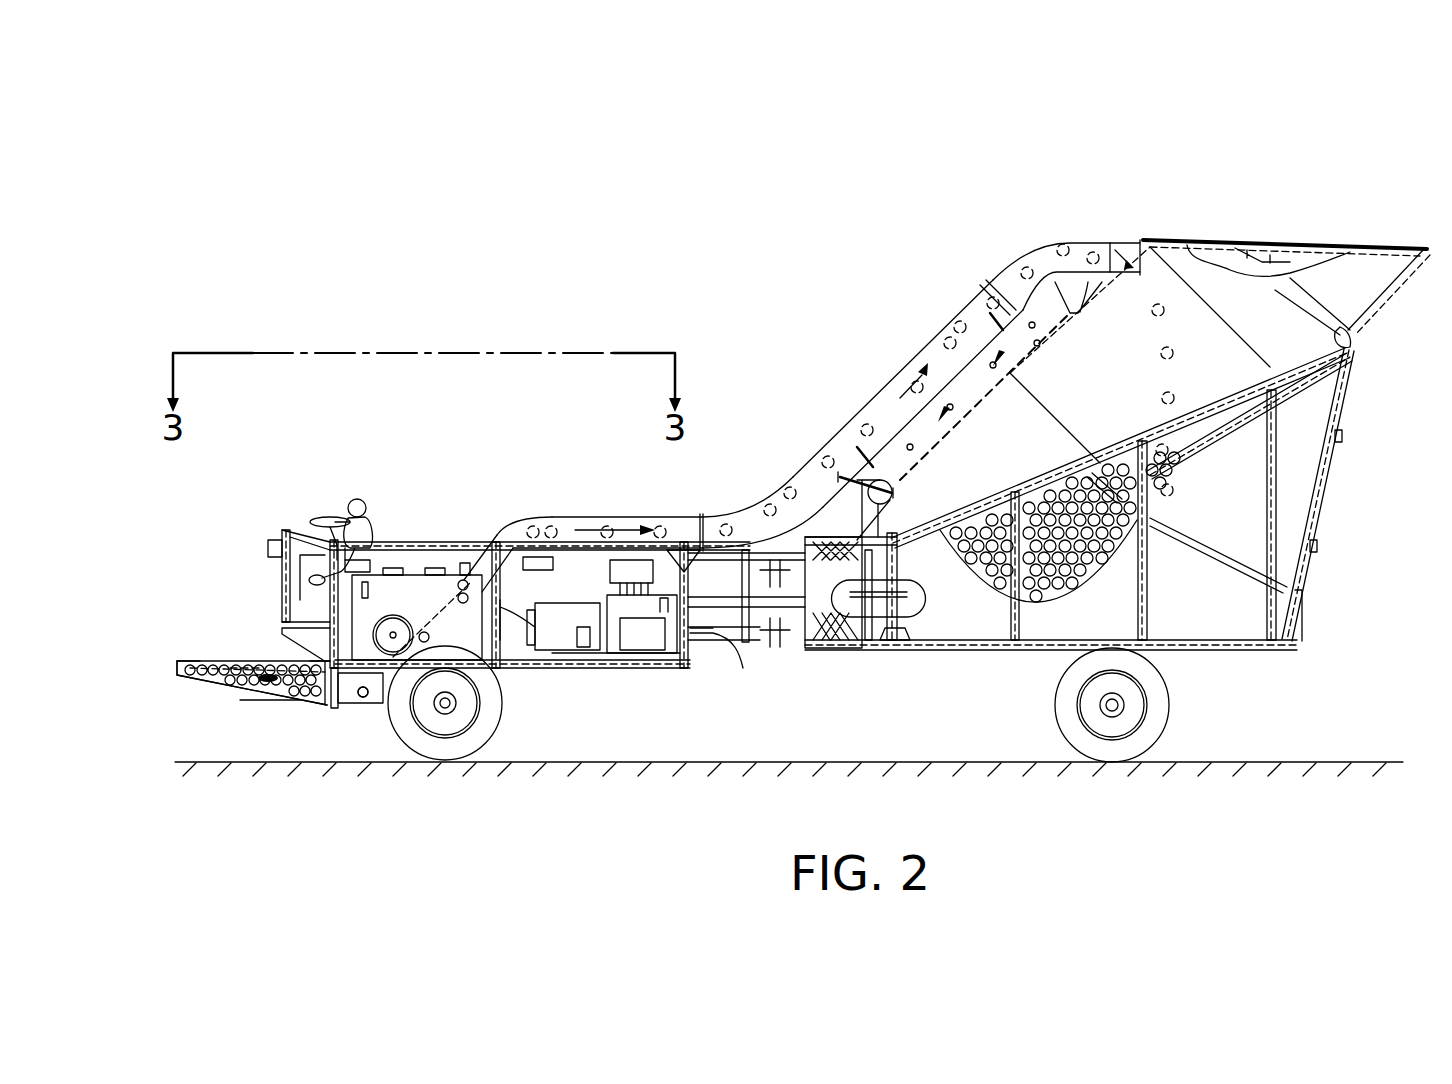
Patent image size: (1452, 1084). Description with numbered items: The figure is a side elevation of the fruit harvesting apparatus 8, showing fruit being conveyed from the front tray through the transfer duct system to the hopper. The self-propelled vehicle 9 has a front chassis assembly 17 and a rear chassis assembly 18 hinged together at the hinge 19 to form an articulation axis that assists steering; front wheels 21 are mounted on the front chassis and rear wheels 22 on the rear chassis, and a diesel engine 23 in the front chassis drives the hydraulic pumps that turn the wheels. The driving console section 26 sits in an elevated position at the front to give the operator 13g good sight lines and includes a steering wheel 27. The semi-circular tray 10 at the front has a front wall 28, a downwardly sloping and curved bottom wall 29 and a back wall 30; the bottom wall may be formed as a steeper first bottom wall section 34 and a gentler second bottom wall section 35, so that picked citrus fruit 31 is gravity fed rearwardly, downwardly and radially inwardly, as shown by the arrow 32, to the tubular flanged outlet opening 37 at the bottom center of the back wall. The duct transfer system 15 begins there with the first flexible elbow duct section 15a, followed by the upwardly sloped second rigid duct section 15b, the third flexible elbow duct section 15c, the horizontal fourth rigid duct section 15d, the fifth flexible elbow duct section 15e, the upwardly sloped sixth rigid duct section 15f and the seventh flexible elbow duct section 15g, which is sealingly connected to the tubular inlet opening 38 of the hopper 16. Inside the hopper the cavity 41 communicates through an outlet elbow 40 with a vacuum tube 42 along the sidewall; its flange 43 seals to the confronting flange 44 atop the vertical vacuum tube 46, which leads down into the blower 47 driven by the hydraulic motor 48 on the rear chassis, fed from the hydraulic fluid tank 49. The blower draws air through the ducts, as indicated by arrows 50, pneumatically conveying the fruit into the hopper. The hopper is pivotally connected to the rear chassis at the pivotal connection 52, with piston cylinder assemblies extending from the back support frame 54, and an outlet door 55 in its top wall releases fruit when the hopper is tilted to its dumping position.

The fruit harvesting apparatus 8 is at (892, 268).
The self-propelled vehicle 9 is at (645, 683).
The semi-circular tray 10 is at (210, 615).
The operator 13g is at (372, 508).
The duct transfer system 15 is at (885, 386).
The first flexible elbow duct section 15a is at (378, 712).
The second rigid straight duct section 15b is at (472, 566).
The third flexible elbow duct section 15c is at (522, 540).
The fourth rigid duct section 15d is at (677, 518).
The fifth flexible elbow duct section 15e is at (778, 495).
The sixth rigid straight duct section 15f is at (932, 350).
The seventh flexible elbow duct section 15g is at (1043, 255).
The hopper 16 is at (1075, 590).
The front chassis assembly 17 is at (540, 670).
The rear chassis assembly 18 is at (955, 650).
The hinge 19 is at (740, 666).
The front wheels 21 is at (500, 720).
The rear wheels 22 is at (1160, 728).
The diesel engine 23 is at (565, 610).
The driving console section 26 is at (330, 505).
The steering wheel 27 is at (298, 527).
The front wall 28 is at (182, 665).
The bottom wall 29 is at (226, 704).
The back wall 30 is at (320, 666).
The citrus fruit 31 is at (990, 300).
The arrow 32 is at (240, 667).
The first bottom wall section 34 is at (215, 683).
The second bottom wall section 35 is at (315, 702).
The tubular flanged outlet opening 37 is at (335, 706).
The tubular inlet opening 38 is at (1128, 248).
The outlet elbow 40 is at (1085, 298).
The cavity 41 is at (1086, 400).
The vacuum tube 42 is at (973, 400).
The flange 43 is at (905, 471).
The confronting flange 44 is at (898, 490).
The vertical vacuum tube 46 is at (868, 516).
The blower 47 is at (925, 595).
The hydraulic motor 48 is at (858, 648).
The hydraulic fluid tank 49 is at (412, 610).
The arrows 50 is at (592, 518).
The pivotal connection 52 is at (1352, 340).
The back support frame 54 is at (1320, 488).
The outlet door 55 is at (1268, 243).